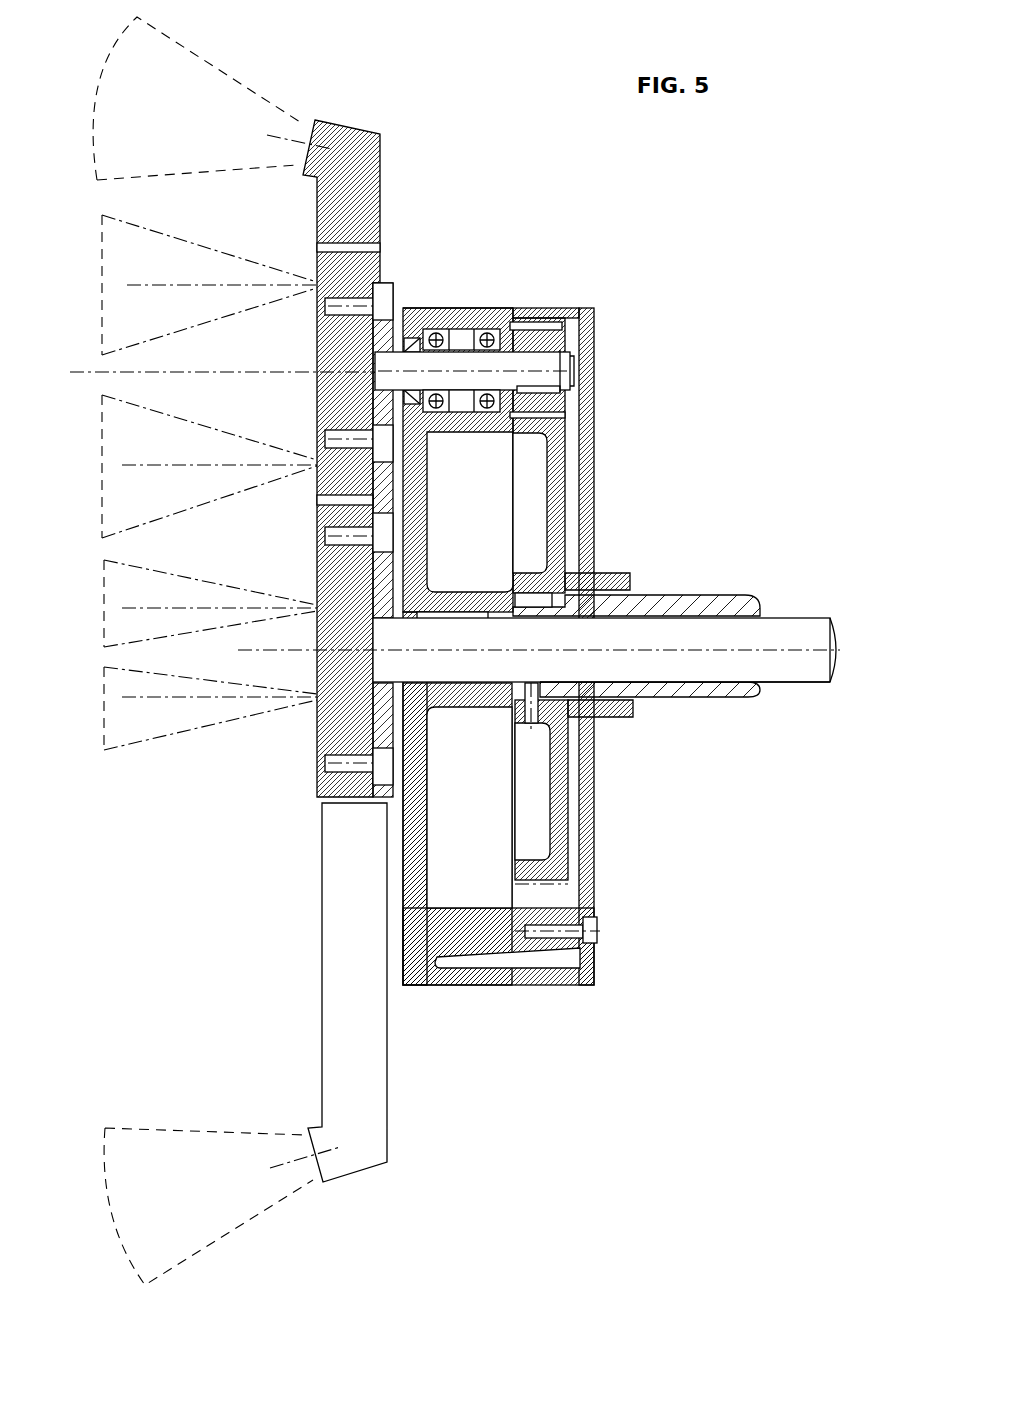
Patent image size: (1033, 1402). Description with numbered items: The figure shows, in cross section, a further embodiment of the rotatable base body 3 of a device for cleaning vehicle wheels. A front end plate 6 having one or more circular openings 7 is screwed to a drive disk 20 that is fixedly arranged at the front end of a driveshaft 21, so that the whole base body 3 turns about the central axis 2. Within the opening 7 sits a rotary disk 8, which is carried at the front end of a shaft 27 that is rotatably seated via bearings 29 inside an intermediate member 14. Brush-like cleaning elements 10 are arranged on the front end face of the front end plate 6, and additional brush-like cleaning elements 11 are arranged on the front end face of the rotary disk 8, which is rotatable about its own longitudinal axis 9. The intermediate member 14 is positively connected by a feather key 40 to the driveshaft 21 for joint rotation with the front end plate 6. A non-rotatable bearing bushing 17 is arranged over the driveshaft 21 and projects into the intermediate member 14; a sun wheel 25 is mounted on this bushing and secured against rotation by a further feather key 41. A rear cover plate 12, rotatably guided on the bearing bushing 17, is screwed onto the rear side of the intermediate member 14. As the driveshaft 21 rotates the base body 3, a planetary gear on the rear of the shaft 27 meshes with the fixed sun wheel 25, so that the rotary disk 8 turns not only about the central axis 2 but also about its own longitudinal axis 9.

The central axis 2 is at (790, 640).
The base body 3 is at (448, 216).
The front end plate 6 is at (335, 890).
The circular opening 7 is at (385, 250).
The rotary disk 8 is at (313, 340).
The longitudinal axis 9 is at (92, 376).
The brush-like cleaning element 10 is at (252, 76).
The brush-like cleaning element 11 is at (177, 414).
The rear cover plate 12 is at (590, 986).
The intermediate member 14 is at (472, 976).
The bearing bushing 17 is at (645, 600).
The drive disk 20 is at (323, 758).
The driveshaft 21 is at (706, 660).
The sun wheel 25 is at (538, 338).
The shaft 27 is at (453, 384).
The bearing 29 is at (484, 316).
The feather key 40 is at (465, 614).
The feather key 41 is at (565, 580).